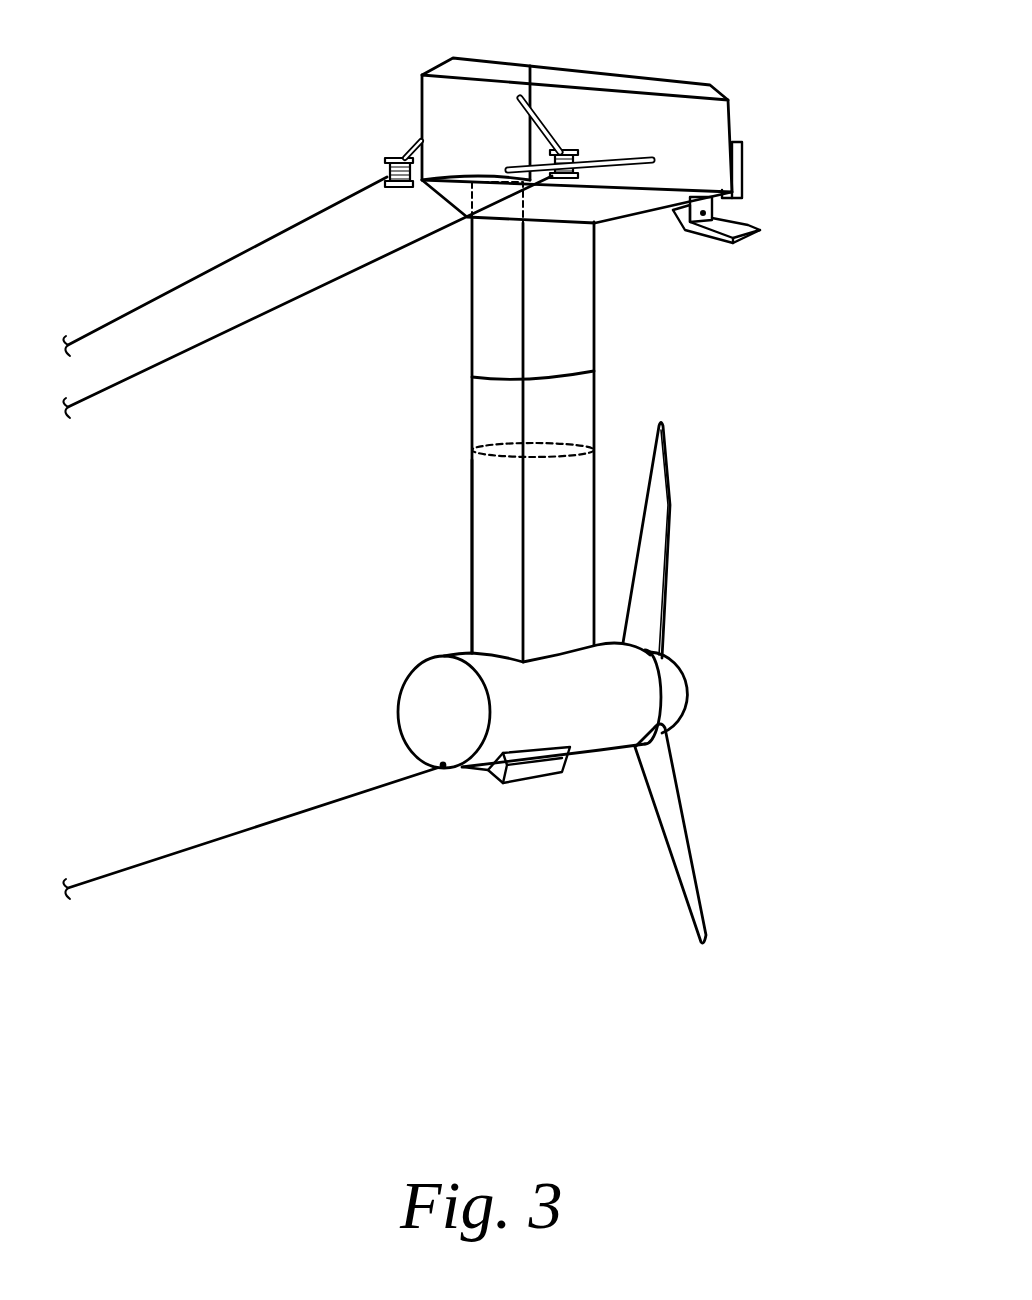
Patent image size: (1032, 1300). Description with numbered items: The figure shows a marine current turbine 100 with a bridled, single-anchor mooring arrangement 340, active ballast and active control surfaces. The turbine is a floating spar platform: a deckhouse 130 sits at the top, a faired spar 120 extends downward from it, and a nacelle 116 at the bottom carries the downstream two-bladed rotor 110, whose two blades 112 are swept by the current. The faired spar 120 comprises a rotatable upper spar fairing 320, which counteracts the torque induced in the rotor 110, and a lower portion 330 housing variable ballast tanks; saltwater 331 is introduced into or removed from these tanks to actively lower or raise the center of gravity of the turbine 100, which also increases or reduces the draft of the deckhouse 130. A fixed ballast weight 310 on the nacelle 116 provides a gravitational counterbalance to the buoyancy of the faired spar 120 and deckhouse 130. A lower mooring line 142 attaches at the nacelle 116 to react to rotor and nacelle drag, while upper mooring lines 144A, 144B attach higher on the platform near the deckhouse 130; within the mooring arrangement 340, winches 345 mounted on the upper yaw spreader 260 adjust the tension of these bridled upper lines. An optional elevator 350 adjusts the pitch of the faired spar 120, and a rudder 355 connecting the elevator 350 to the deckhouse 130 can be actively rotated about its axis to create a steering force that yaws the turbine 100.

The marine current turbine 100 is at (800, 47).
The downstream two-bladed rotor 110 is at (750, 422).
The rotor blade 112 is at (670, 543).
The nacelle 116 is at (593, 711).
The faired spar 120 is at (410, 262).
The deckhouse 130 is at (679, 141).
The mooring line 142 is at (268, 822).
The mooring line 144A is at (235, 255).
The mooring line 144B is at (200, 343).
The upper yaw spreader 260 is at (413, 147).
The fixed ballast weight 310 is at (547, 777).
The rotatable upper spar fairing 320 is at (575, 322).
The lower portion 330 is at (490, 565).
The saltwater 331 is at (553, 440).
The mooring arrangement 340 is at (190, 96).
The winch 345 is at (410, 157).
The elevator 350 is at (748, 240).
The rudder 355 is at (742, 170).